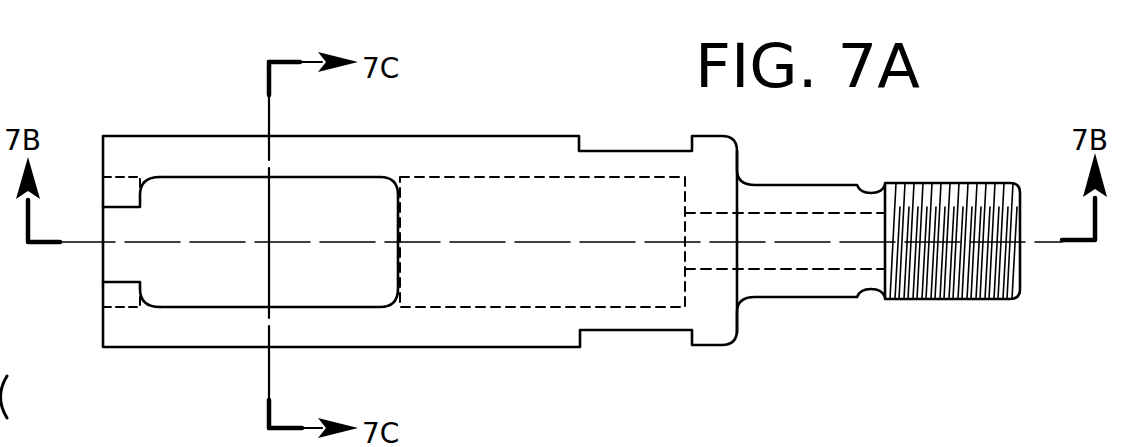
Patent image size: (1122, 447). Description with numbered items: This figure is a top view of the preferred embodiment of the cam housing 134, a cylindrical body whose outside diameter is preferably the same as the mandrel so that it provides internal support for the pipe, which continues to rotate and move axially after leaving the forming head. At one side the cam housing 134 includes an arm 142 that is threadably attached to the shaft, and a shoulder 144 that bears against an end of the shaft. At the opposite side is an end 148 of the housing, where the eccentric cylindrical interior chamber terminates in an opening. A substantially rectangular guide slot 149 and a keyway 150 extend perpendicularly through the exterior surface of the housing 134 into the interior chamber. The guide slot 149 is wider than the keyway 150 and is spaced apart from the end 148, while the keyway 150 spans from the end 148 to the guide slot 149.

The cam housing 134 is at (538, 130).
The arm 142 is at (800, 298).
The shoulder 144 is at (739, 320).
The end 148 is at (100, 322).
The guide slot 149 is at (325, 213).
The keyway 150 is at (139, 221).